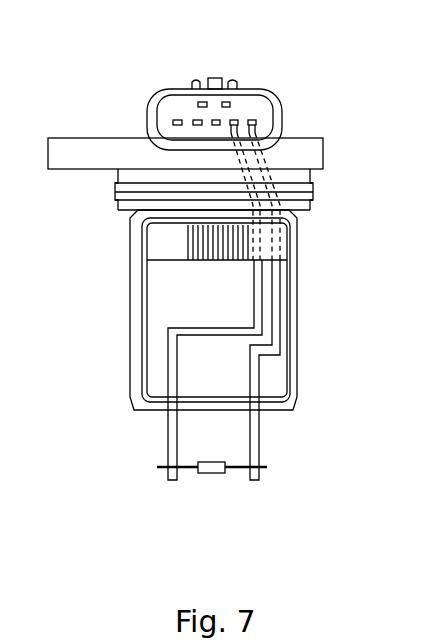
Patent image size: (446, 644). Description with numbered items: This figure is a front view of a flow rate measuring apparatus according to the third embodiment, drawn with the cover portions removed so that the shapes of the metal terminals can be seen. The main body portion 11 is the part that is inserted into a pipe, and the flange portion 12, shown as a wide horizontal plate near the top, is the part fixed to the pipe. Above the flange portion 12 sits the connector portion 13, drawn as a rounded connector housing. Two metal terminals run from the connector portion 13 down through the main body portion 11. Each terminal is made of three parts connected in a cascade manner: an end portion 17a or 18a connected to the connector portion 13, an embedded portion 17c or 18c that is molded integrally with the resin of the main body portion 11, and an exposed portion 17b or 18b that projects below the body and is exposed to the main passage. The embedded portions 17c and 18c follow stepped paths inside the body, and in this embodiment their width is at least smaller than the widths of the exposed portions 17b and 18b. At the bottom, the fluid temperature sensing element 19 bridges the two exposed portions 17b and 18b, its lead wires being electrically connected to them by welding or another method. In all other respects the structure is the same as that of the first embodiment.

The main body portion 11 is at (300, 253).
The flange portion 12 is at (100, 138).
The connector portion 13 is at (282, 115).
The end portion 17a is at (252, 122).
The exposed portion 17b is at (257, 450).
The embedded portion 17c is at (282, 328).
The end portion 18a is at (233, 122).
The exposed portion 18b is at (172, 450).
The embedded portion 18c is at (165, 350).
The fluid temperature sensing element 19 is at (207, 477).